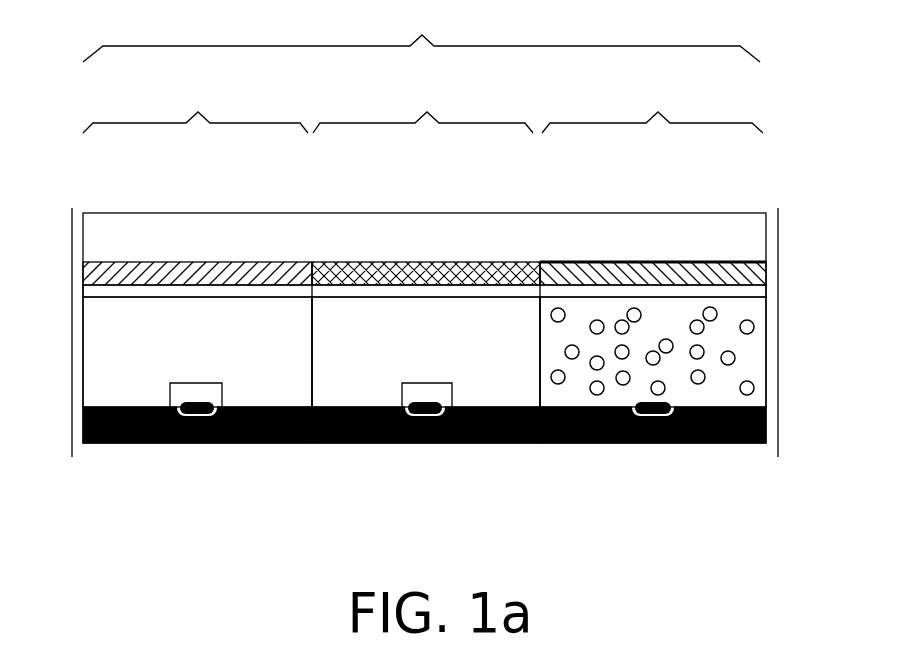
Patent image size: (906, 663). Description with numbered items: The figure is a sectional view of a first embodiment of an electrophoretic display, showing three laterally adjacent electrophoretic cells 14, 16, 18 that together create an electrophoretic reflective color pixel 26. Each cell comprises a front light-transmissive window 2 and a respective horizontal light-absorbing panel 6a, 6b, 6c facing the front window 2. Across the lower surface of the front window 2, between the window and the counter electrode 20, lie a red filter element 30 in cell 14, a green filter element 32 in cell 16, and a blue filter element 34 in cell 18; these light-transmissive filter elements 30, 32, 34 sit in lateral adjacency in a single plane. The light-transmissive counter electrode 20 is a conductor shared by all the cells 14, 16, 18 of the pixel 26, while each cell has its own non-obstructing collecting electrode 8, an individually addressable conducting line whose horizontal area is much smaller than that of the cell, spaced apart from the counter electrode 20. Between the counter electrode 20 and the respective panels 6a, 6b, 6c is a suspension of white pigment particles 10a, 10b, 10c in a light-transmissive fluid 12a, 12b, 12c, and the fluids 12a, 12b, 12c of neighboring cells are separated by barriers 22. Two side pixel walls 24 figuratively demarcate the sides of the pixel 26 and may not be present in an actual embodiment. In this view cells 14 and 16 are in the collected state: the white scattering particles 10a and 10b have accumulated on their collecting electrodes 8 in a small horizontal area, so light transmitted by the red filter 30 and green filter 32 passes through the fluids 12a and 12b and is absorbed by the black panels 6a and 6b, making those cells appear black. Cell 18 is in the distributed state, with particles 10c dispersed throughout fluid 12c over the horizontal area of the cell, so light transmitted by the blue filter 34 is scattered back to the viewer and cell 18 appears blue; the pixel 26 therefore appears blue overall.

The front light-transmissive window 2 is at (740, 235).
The electrophoretic reflective color pixel 26 is at (421, 35).
The electrophoretic cell 14 is at (195, 108).
The electrophoretic cell 16 is at (423, 106).
The electrophoretic cell 18 is at (652, 106).
The side pixel walls 24 is at (70, 357).
The red filter element 30 is at (172, 272).
The green filter element 32 is at (402, 270).
The blue filter element 34 is at (628, 268).
The light-transmissive counter electrode 20 is at (247, 290).
The barriers 22 is at (85, 380).
The light-absorbing panel 6a is at (277, 420).
The light-absorbing panel 6b is at (490, 413).
The light-absorbing panel 6c is at (573, 413).
The collecting electrode 8 is at (200, 414).
The pigment particles 10a is at (177, 400).
The pigment particles 10b is at (400, 393).
The pigment particles 10c is at (623, 385).
The light-transmissive fluid 12a is at (128, 312).
The light-transmissive fluid 12b is at (352, 305).
The light-transmissive fluid 12c is at (575, 315).